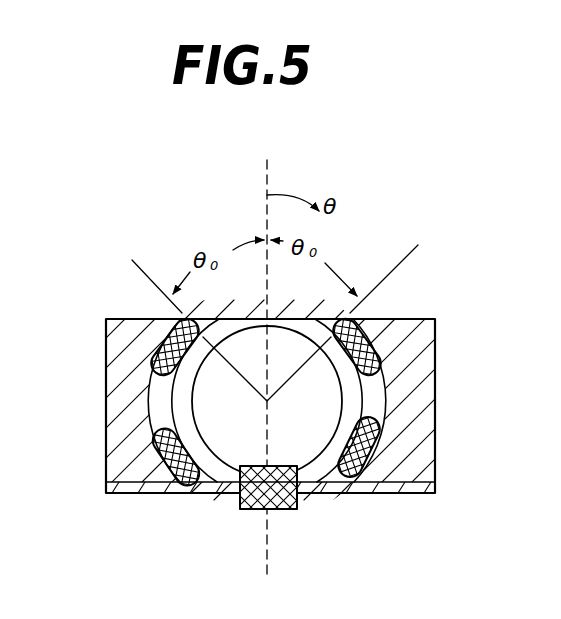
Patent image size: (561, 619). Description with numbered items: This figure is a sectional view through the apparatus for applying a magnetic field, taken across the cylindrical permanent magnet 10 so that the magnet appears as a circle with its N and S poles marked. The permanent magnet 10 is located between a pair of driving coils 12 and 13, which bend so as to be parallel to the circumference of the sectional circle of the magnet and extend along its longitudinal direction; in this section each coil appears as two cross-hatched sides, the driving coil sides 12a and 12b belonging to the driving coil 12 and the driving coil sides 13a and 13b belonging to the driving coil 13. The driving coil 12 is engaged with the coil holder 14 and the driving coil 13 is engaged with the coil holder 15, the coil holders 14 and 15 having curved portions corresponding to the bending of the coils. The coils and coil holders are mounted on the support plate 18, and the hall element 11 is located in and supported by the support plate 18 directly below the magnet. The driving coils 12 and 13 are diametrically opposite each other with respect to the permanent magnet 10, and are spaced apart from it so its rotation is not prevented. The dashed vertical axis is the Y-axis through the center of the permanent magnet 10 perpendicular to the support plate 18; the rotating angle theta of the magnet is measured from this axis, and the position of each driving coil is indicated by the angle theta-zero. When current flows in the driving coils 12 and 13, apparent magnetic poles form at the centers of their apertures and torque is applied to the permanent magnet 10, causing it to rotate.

The permanent magnet 10 is at (286, 348).
The hall element 11 is at (298, 503).
The driving coil 12 is at (158, 320).
The driving coil side 12a is at (157, 358).
The driving coil side 12b is at (157, 448).
The driving coil 13 is at (350, 318).
The driving coil side 13a is at (378, 347).
The driving coil side 13b is at (383, 432).
The coil holder 14 is at (123, 335).
The coil holder 15 is at (425, 340).
The support plate 18 is at (437, 485).